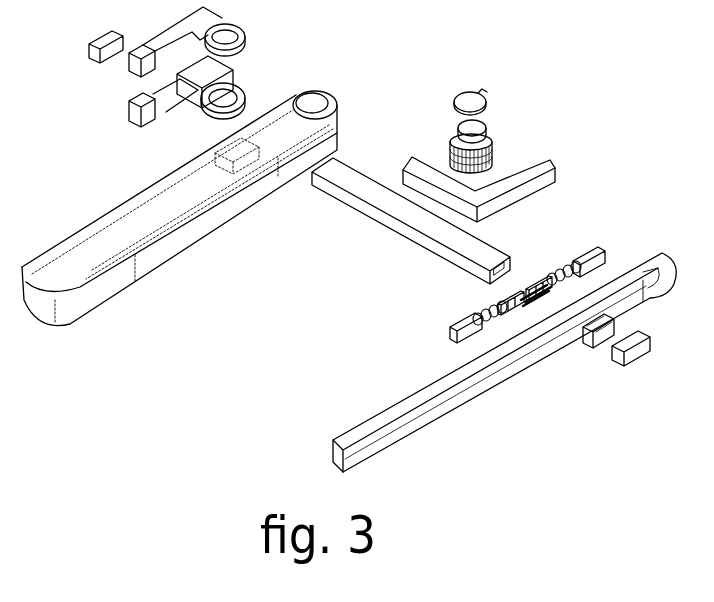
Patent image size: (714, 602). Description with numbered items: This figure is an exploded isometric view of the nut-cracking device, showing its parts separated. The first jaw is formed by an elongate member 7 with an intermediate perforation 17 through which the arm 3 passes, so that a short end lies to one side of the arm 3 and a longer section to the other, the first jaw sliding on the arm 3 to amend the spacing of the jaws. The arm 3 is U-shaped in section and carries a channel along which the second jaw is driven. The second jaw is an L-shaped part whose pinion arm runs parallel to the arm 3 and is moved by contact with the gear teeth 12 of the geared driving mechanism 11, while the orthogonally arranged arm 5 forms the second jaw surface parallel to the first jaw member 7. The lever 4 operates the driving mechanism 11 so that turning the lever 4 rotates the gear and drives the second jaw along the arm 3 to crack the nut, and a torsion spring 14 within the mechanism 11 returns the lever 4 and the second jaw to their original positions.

The arm 3 is at (408, 235).
The lever 4 is at (225, 219).
The arm forming the second jaw 5 is at (517, 193).
The elongate member 7 is at (530, 363).
The driving mechanism 11 is at (485, 125).
The gear teeth 12 is at (493, 149).
The torsion spring 14 is at (488, 103).
The intermediate perforation 17 is at (598, 340).